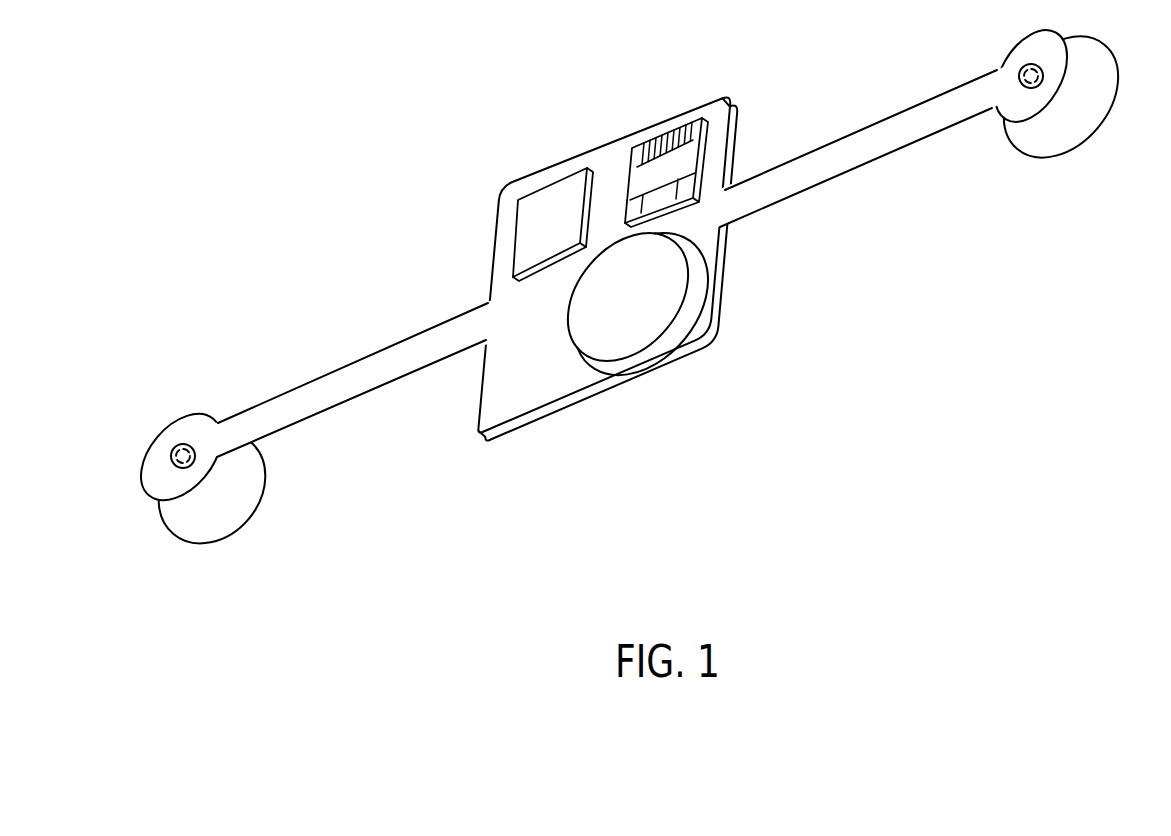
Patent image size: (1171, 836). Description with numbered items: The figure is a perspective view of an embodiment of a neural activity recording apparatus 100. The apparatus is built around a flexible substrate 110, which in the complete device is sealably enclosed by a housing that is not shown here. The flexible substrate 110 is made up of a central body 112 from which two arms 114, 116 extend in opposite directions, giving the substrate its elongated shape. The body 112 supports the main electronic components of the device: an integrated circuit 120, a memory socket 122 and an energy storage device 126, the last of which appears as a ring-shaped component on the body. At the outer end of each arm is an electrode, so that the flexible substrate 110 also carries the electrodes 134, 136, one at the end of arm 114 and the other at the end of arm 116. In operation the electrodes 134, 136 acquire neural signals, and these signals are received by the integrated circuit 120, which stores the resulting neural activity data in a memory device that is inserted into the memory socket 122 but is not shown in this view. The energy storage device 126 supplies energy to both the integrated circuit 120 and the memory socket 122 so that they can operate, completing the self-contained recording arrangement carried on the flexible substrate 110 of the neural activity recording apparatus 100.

The neural activity recording apparatus 100 is at (274, 147).
The flexible substrate 110 is at (243, 362).
The body 112 is at (558, 162).
The arm 114 is at (355, 362).
The arm 116 is at (847, 135).
The integrated circuit 120 is at (523, 233).
The memory socket 122 is at (657, 173).
The energy storage device 126 is at (617, 317).
The electrode 134 is at (248, 475).
The electrode 136 is at (1087, 108).